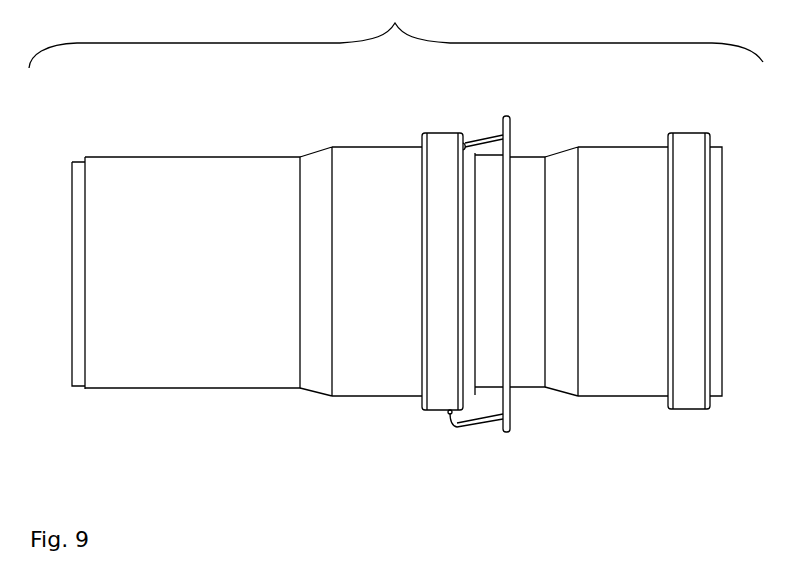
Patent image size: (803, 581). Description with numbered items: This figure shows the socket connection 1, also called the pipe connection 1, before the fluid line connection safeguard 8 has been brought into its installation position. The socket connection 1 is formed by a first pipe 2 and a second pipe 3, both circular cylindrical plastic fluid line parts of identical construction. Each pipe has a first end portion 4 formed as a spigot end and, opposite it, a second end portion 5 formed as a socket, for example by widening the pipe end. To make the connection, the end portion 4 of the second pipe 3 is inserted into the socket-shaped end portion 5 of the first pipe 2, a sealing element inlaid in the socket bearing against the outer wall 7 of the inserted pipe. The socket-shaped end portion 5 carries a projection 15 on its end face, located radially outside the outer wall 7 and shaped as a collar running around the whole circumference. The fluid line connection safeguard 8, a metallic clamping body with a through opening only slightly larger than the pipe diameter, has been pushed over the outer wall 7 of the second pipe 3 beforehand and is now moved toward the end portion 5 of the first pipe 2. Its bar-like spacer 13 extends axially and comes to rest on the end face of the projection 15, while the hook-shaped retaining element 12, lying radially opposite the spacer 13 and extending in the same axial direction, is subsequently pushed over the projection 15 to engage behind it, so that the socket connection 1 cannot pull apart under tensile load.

The socket connection 1 is at (396, 34).
The first pipe 2 is at (232, 375).
The second pipe 3 is at (624, 382).
The first end portion 4 is at (77, 165).
The second end portion 5 is at (358, 130).
The outer wall 7 is at (184, 329).
The fluid line connection safeguard 8 is at (514, 353).
The retaining element 12 is at (488, 418).
The spacer 13 is at (488, 133).
The projection 15 is at (440, 400).